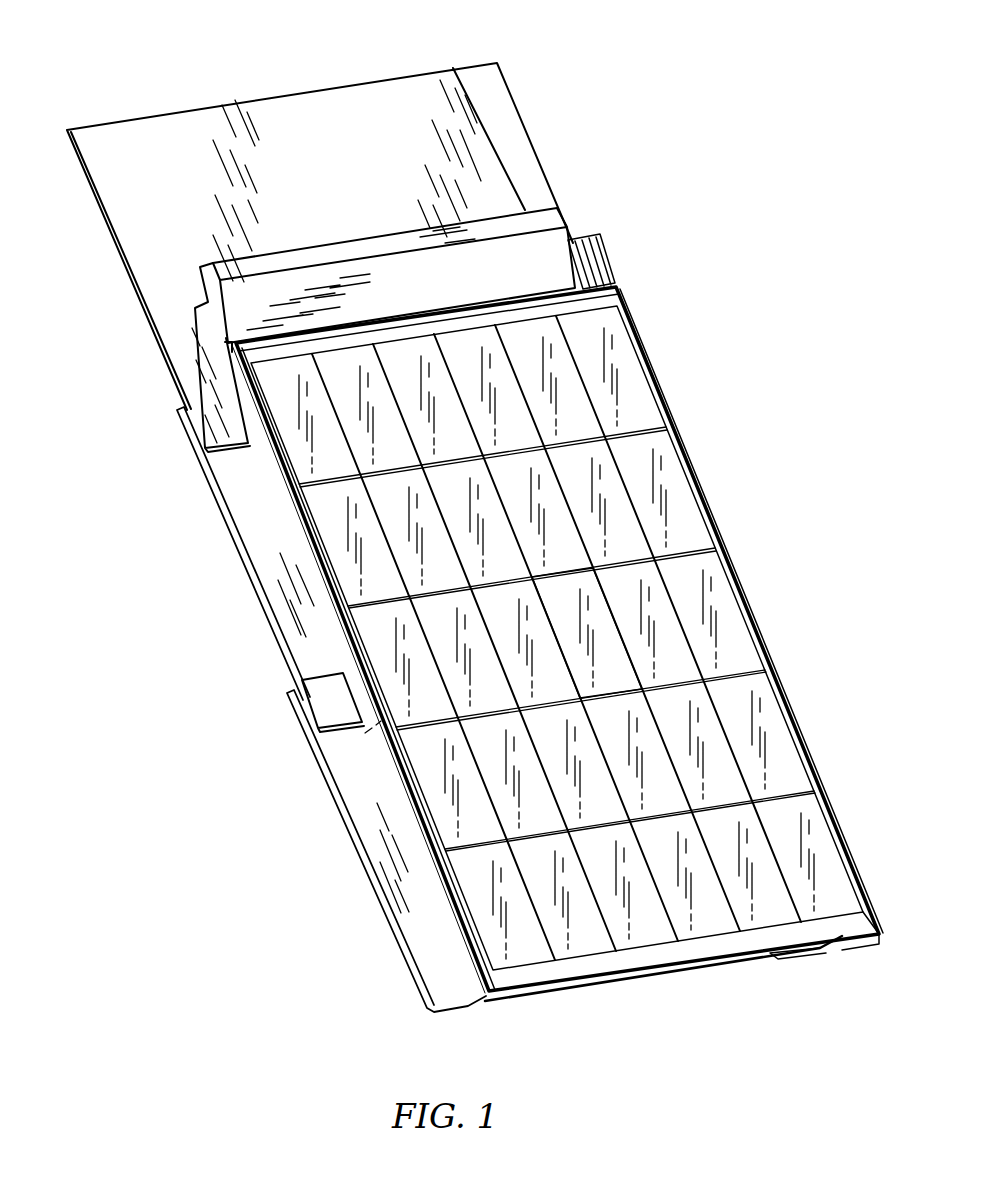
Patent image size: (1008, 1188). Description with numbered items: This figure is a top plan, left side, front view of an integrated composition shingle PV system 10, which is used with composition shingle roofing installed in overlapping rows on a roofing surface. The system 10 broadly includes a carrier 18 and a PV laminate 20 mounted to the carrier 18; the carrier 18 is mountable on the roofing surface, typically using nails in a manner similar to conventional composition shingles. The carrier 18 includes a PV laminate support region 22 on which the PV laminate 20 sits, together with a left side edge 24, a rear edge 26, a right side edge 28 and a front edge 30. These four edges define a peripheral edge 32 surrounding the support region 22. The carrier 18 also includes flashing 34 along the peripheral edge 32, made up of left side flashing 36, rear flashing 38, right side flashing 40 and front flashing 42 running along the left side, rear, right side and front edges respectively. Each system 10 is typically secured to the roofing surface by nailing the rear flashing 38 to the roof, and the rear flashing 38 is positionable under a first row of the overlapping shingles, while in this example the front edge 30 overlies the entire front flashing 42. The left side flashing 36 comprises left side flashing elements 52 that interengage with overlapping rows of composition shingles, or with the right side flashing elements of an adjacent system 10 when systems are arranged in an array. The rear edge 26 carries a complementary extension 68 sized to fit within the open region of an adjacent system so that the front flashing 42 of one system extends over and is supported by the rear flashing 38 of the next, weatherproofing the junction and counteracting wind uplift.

The integrated composition shingle PV system 10 is at (638, 92).
The carrier 18 is at (295, 709).
The PV laminate 20 is at (557, 638).
The PV laminate support region 22 is at (567, 593).
The left side edge 24 is at (459, 923).
The rear edge 26 is at (206, 298).
The right side edge 28 is at (564, 659).
The front edge 30 is at (770, 952).
The peripheral edge 32 is at (875, 892).
The flashing 34 is at (365, 897).
The left side flashing 36 is at (250, 612).
The rear flashing 38 is at (324, 108).
The right side flashing 40 is at (752, 596).
The front flashing 42 is at (587, 990).
The left side flashing elements 52 is at (262, 548).
The complementary extension 68 is at (535, 222).